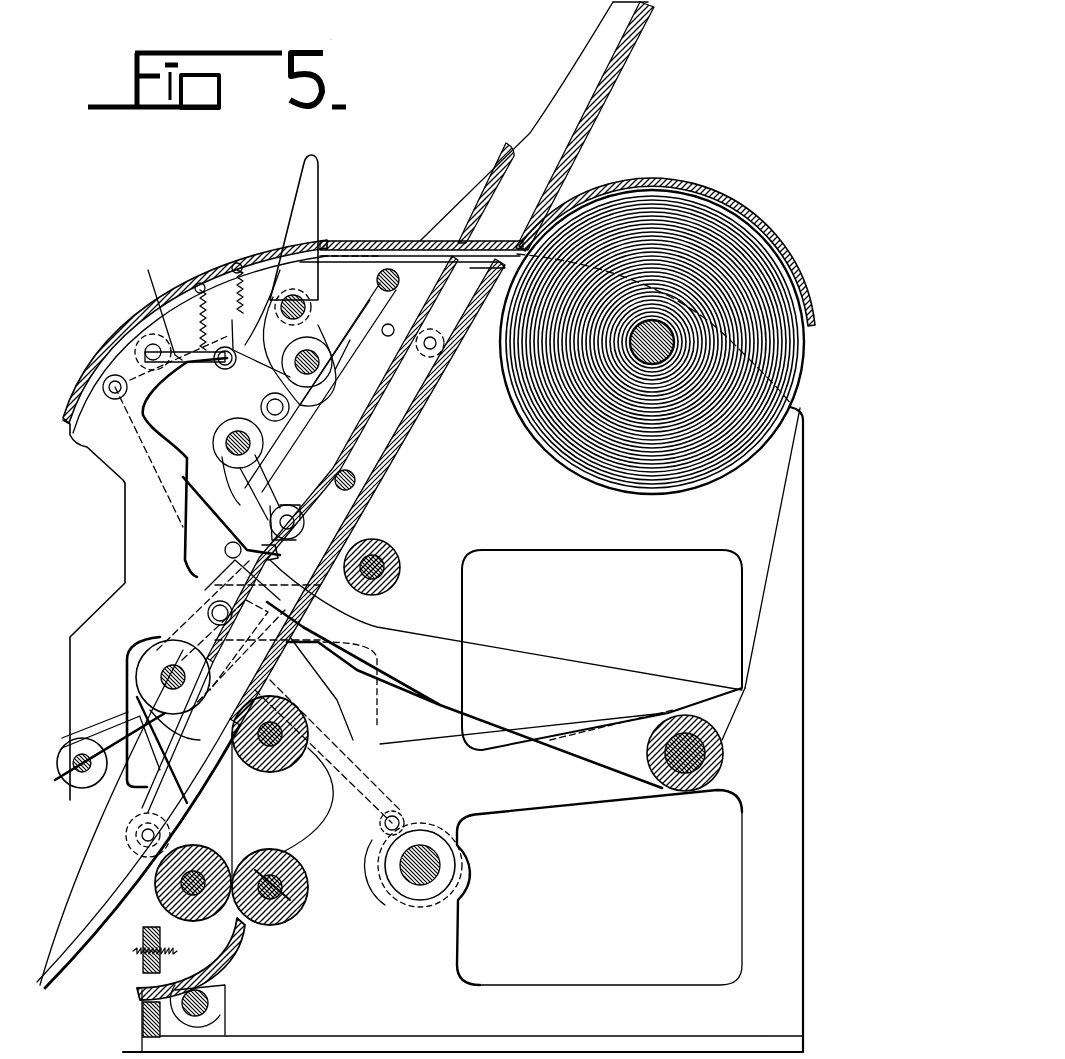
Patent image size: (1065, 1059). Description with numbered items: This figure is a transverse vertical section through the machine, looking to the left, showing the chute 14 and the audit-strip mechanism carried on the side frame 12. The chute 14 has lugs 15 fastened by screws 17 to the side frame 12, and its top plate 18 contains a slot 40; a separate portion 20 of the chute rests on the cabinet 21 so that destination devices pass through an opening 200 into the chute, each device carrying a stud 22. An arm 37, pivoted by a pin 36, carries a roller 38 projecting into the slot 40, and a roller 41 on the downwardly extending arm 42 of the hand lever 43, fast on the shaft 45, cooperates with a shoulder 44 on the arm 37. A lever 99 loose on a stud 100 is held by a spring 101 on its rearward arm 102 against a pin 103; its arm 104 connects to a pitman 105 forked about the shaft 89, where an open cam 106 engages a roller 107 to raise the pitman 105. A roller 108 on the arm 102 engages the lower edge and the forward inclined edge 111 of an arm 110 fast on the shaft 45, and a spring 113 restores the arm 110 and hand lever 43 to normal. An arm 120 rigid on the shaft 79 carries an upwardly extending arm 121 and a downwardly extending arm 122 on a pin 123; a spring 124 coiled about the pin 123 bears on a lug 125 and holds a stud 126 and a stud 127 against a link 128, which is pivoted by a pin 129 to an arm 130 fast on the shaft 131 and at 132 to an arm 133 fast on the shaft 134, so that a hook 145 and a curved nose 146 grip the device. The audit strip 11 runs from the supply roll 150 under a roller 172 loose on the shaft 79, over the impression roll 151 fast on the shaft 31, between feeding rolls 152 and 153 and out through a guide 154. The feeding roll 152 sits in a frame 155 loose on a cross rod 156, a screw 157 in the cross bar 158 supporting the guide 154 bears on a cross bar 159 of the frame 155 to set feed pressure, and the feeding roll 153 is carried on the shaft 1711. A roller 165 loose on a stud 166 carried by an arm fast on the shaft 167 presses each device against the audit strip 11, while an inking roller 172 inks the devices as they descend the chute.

The audit strip 11 is at (768, 523).
The side frame 12 is at (590, 538).
The chute 14 is at (420, 409).
The lugs 15 is at (450, 340).
The screws 17 is at (445, 352).
The top plate 18 is at (402, 272).
The portion of the chute 20 is at (575, 128).
The cabinet 21 is at (365, 235).
The stud or screw 22 is at (352, 472).
The shaft 31 is at (270, 790).
The pin 36 is at (400, 278).
The arm 37 is at (352, 300).
The roller 38 is at (305, 522).
The slot 40 is at (362, 496).
The roller 41 is at (260, 487).
The arm 42 is at (222, 372).
The hand lever 43 is at (316, 170).
The shoulder 44 is at (216, 481).
The shaft 45 is at (300, 303).
The shaft 79 is at (707, 751).
The shaft 89 is at (445, 858).
The lever 99 is at (130, 350).
The stud 100 is at (156, 342).
The spring 101 is at (197, 282).
The arm 102 is at (200, 366).
The pin 103 is at (183, 275).
The arm 104 is at (105, 378).
The pitman 105 is at (200, 530).
The open cam 106 is at (440, 898).
The roller 107 is at (402, 815).
The roller 108 is at (180, 379).
The arm 110 is at (262, 262).
The forward inclined edge 111 is at (263, 367).
The spring 113 is at (240, 262).
The arm 120 is at (528, 682).
The upwardly extending arm 121 is at (224, 551).
The downwardly extending arm 122 is at (205, 636).
The pin 123 is at (208, 610).
The spring 124 is at (208, 597).
The lug 125 is at (267, 628).
The stud 126 is at (270, 521).
The stud 127 is at (101, 734).
The link 128 is at (355, 405).
The pin 129 is at (392, 324).
The arm 130 is at (310, 350).
The shaft 131 is at (316, 358).
The pivot 132 is at (123, 817).
The arm 133 is at (130, 780).
The shaft 134 is at (75, 785).
The hook or shoulder 145 is at (291, 558).
The curved nose 146 is at (190, 735).
The supply roll 150 is at (548, 430).
The impression roll 151 is at (313, 770).
The feeding roll 152 is at (200, 860).
The feeding roll 153 is at (308, 897).
The guide 154 is at (222, 950).
The frame 155 is at (210, 990).
The cross rod 156 is at (212, 1008).
The screw 157 is at (135, 958).
The cross bar 158 is at (140, 1018).
The cross bar 159 is at (140, 935).
The roller 165 is at (145, 667).
The stud 166 is at (160, 679).
The shaft 167 is at (224, 440).
The roller 172 is at (392, 552).
The opening 200 is at (500, 235).
The shaft 1711 is at (305, 913).